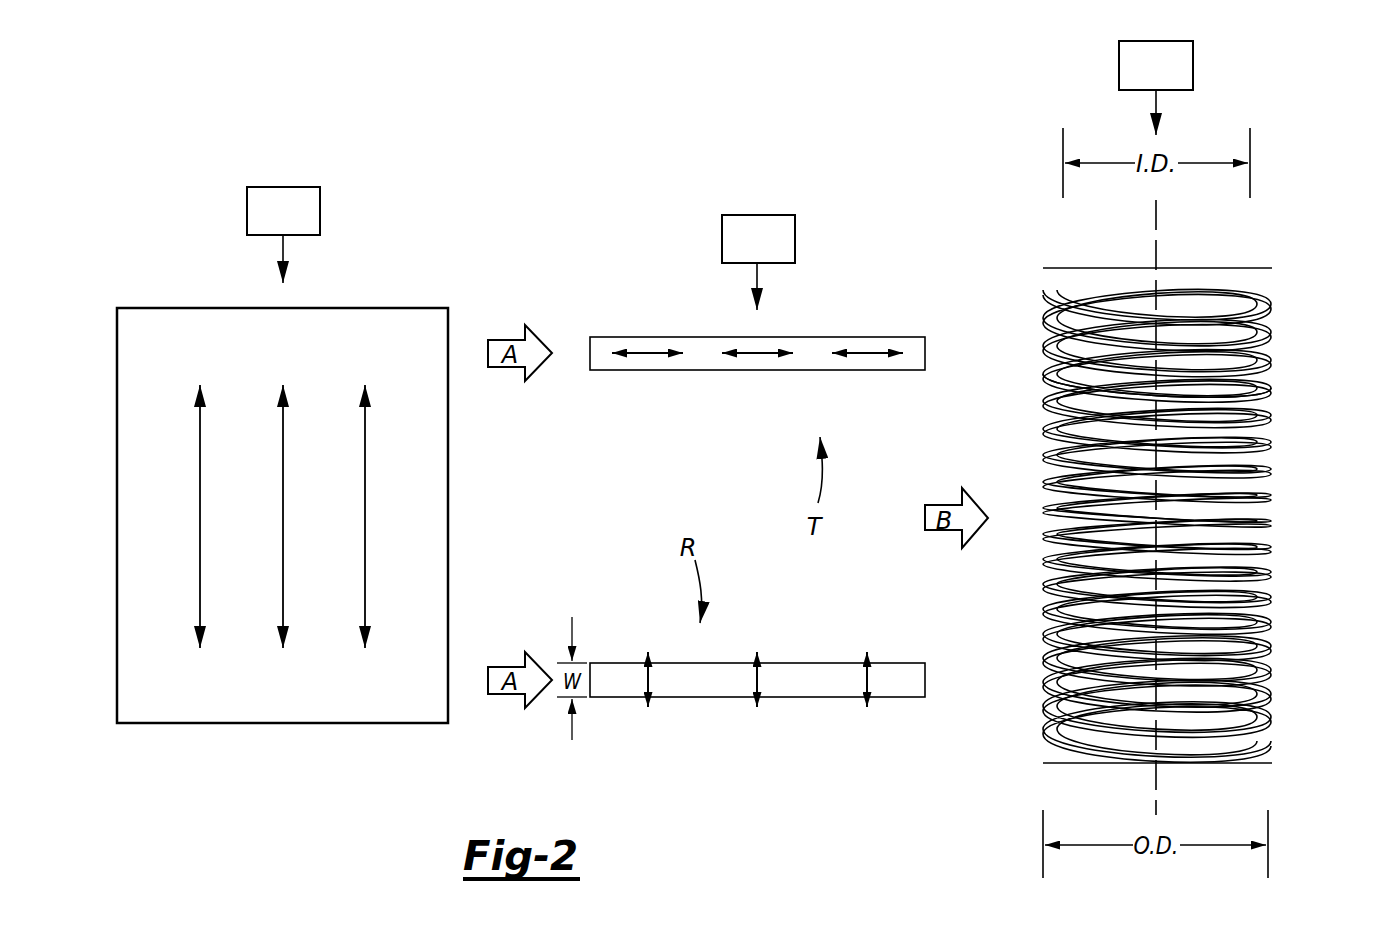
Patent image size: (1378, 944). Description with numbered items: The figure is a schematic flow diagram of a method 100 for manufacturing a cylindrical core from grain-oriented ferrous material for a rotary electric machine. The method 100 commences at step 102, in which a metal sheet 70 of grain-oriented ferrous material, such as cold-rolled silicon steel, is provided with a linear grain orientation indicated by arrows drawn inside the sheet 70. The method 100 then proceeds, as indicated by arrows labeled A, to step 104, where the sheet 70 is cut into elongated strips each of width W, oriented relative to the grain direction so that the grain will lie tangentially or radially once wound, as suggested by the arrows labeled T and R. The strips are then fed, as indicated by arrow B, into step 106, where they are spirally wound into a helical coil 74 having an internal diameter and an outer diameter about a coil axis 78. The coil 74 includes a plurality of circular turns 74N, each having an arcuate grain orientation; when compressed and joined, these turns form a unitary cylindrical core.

The metal sheet 70 is at (392, 308).
The helical coil 74 is at (1292, 318).
The circular turn 74N is at (1270, 405).
The coil axis 78 is at (1152, 232).
The method 100 is at (906, 148).
The step of providing the metal sheet 102 is at (268, 230).
The step of cutting the sheet into strips 104 is at (742, 258).
The step of winding the strips into a helical coil 106 is at (1141, 85).